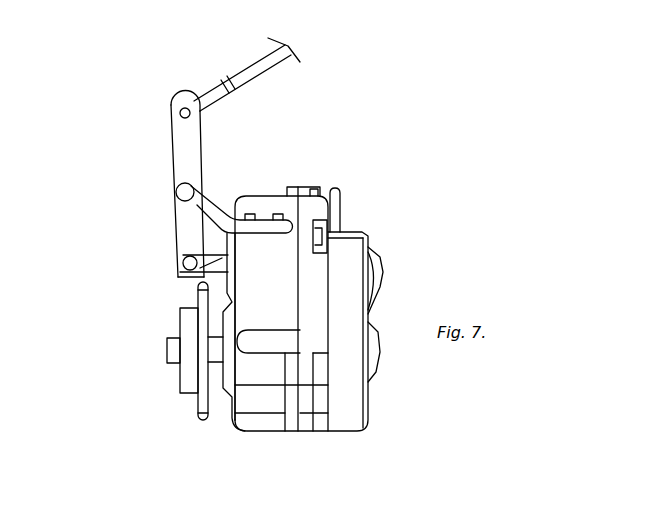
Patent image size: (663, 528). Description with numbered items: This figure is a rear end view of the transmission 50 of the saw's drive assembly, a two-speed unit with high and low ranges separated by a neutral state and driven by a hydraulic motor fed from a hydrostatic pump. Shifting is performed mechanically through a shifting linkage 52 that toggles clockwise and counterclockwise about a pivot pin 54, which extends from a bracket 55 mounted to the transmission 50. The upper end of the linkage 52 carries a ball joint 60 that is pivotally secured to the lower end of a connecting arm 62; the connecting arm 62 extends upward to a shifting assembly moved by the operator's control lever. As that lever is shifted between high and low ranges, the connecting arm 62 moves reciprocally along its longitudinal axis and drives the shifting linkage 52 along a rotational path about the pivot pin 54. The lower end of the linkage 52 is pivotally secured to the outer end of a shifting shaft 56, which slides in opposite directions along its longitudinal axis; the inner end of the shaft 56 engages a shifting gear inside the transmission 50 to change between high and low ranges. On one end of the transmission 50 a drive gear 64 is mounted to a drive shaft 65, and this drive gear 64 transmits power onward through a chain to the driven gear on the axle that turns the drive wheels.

The transmission 50 is at (284, 296).
The shifting linkage 52 is at (180, 136).
The pivot pin 54 is at (182, 190).
The bracket 55 is at (213, 205).
The shifting shaft 56 is at (200, 275).
The ball joint 60 is at (181, 100).
The connecting arm 62 is at (257, 61).
The drive gear 64 is at (190, 387).
The drive shaft 65 is at (217, 350).